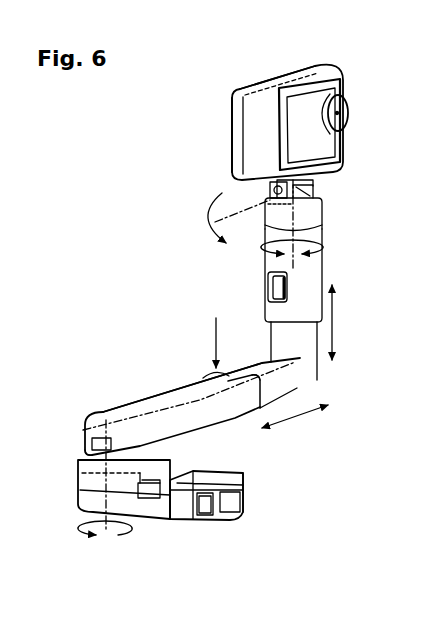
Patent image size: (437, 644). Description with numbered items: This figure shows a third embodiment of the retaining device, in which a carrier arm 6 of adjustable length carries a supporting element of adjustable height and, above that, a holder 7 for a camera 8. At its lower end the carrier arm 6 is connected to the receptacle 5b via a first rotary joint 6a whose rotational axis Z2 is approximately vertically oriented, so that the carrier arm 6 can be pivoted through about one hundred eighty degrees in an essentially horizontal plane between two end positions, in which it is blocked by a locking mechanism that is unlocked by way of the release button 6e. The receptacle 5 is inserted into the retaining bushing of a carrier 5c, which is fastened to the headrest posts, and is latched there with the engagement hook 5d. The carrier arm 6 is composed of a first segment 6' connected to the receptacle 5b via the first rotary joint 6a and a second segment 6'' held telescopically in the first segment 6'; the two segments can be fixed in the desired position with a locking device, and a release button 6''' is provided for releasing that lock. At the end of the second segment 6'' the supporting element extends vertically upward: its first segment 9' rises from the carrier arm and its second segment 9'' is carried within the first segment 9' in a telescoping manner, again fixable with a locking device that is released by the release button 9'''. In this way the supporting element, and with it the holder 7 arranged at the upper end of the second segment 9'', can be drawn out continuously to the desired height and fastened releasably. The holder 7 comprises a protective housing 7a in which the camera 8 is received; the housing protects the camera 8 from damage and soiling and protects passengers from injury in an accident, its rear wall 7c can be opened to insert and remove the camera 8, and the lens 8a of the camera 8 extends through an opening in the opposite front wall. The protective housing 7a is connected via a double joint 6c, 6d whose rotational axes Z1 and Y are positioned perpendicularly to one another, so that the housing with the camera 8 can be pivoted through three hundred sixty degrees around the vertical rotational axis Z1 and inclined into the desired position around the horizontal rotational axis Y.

The receptacle 5 is at (250, 468).
The receptacle 5b is at (250, 468).
The carrier 5c is at (153, 487).
The engagement hook 5d is at (192, 520).
The carrier arm 6 is at (205, 384).
The first segment of the carrier arm 6' is at (182, 379).
The second segment of the carrier arm 6'' is at (247, 346).
The release button 6''' is at (203, 348).
The first rotary joint 6a is at (83, 470).
The double joint 6c is at (275, 181).
The double joint 6d is at (313, 210).
The release button 6e is at (84, 452).
The holder 7 is at (374, 184).
The protective housing 7a is at (316, 76).
The rear wall 7c is at (233, 144).
The camera 8 is at (323, 146).
The lens 8a is at (350, 109).
The first segment of the supporting element 9' is at (323, 340).
The second segment of the supporting element 9'' is at (333, 251).
The release button 9''' is at (243, 289).
The horizontal rotational axis Y is at (222, 218).
The vertical rotational axis Z1 is at (308, 246).
The rotational axis of the first rotary joint Z2 is at (118, 535).